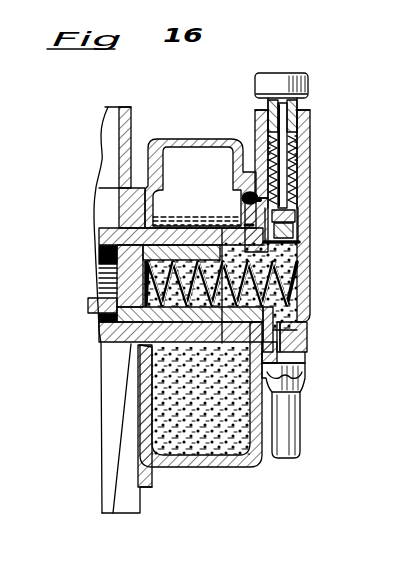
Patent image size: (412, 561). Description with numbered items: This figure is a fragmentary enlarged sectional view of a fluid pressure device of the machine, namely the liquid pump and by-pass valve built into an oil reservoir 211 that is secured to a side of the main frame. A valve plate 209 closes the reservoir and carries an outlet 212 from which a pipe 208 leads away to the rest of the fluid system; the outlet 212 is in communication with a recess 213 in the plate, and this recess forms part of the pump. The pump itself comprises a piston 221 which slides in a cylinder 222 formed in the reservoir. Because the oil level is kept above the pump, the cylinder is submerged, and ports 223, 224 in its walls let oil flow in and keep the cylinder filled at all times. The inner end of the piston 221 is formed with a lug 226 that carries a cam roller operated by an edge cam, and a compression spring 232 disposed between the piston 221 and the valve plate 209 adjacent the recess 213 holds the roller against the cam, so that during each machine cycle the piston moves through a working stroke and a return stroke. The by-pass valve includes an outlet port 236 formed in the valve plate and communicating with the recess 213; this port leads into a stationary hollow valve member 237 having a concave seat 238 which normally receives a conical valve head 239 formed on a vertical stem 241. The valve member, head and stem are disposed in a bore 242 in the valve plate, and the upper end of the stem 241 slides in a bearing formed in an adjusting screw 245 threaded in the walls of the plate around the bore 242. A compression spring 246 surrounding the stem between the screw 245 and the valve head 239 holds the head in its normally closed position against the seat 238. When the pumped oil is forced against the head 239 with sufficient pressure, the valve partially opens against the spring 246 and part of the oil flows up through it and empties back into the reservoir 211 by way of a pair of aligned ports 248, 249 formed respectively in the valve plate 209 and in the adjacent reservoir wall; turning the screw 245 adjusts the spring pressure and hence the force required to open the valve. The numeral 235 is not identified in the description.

The pipe 208 is at (302, 412).
The valve plate 209 is at (308, 295).
The oil reservoir 211 is at (205, 458).
The outlet 212 is at (305, 338).
The recess 213 is at (310, 317).
The piston 221 is at (98, 266).
The cylinder 222 is at (103, 338).
The port 223 is at (227, 343).
The port 224 is at (221, 217).
The lug 226 is at (88, 302).
The compression spring 232 is at (308, 278).
The valve body 235 is at (312, 177).
The outlet port 236 is at (303, 242).
The hollow valve member 237 is at (296, 227).
The concave seat 238 is at (297, 217).
The conical valve head 239 is at (296, 210).
The vertical stem 241 is at (285, 150).
The bore 242 is at (300, 160).
The adjusting screw 245 is at (307, 85).
The compression spring 246 is at (303, 142).
The port 248 is at (240, 140).
The port 249 is at (242, 200).